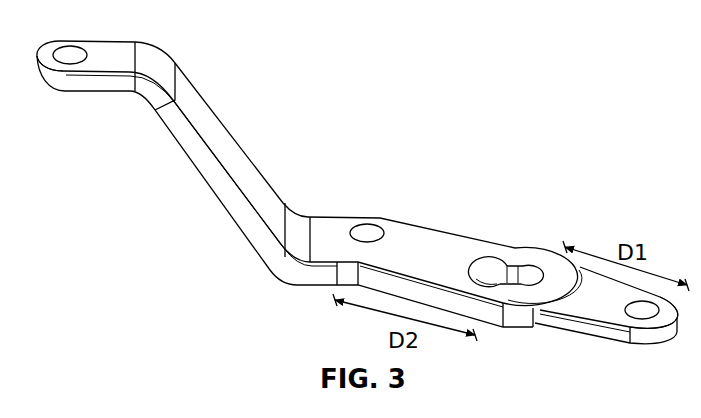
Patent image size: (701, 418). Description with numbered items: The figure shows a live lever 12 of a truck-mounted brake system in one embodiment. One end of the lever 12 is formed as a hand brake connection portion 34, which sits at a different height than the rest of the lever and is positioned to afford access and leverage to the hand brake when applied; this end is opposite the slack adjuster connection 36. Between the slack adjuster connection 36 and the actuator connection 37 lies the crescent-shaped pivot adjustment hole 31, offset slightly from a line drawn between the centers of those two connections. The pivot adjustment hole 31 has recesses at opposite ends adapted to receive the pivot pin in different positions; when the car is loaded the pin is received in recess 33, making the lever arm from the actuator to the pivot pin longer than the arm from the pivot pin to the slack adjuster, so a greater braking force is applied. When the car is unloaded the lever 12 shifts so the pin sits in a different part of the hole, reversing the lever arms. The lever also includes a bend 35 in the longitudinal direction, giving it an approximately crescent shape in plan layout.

The lever 12 is at (581, 57).
The pivot adjustment hole 31 is at (488, 260).
The recess 33 is at (533, 278).
The hand brake connection portion 34 is at (85, 93).
The bend 35 is at (333, 274).
The slack adjuster connection 36 is at (640, 347).
The actuator connection 37 is at (395, 217).